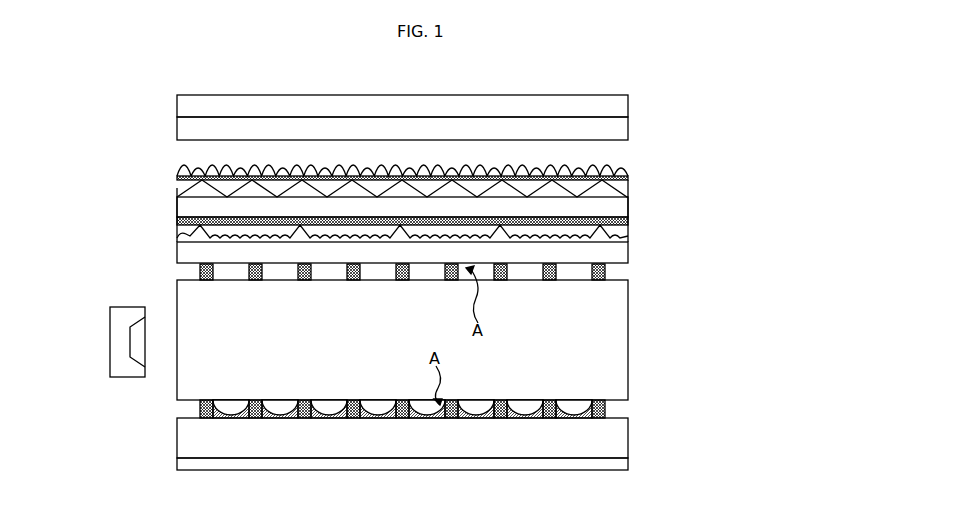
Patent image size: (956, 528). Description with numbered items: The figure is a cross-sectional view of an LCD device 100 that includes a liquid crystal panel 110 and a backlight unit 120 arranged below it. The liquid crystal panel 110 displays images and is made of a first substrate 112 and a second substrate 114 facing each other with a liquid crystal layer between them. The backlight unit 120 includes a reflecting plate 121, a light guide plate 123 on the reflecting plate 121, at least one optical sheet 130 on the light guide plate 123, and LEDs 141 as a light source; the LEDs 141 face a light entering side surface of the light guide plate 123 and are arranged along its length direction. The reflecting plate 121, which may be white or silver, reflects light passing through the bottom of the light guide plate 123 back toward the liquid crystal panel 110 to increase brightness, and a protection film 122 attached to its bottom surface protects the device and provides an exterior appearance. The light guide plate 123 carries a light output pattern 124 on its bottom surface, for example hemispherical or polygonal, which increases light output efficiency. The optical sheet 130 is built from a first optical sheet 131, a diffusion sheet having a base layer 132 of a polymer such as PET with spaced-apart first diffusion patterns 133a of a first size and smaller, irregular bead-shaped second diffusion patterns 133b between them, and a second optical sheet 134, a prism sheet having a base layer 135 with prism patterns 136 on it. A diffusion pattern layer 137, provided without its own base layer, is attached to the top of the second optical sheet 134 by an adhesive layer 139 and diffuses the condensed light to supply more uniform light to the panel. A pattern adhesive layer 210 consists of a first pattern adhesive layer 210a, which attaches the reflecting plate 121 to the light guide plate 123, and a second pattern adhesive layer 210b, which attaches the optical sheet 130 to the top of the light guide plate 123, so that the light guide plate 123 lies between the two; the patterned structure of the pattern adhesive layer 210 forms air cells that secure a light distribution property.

The LCD device 100 is at (405, 512).
The liquid crystal panel 110 is at (454, 117).
The first substrate 112 is at (630, 131).
The second substrate 114 is at (630, 107).
The backlight unit 120 is at (515, 319).
The reflecting plate 121 is at (630, 440).
The protection film 122 is at (630, 466).
The light guide plate 123 is at (630, 340).
The light output pattern 124 is at (572, 400).
The optical sheet 130 is at (449, 211).
The first optical sheet 131 is at (653, 229).
The base layer 132 is at (630, 256).
The first diffusion patterns 133a is at (402, 288).
The second diffusion patterns 133b is at (534, 268).
The second optical sheet 134 is at (425, 195).
The base layer 135 is at (688, 192).
The prism patterns 136 is at (630, 192).
The diffusion pattern layer 137 is at (387, 175).
The adhesive layer 139 is at (177, 172).
The LEDs 141 is at (110, 340).
The pattern adhesive layer 210 is at (464, 341).
The first pattern adhesive layer 210a is at (453, 383).
The second pattern adhesive layer 210b is at (454, 288).